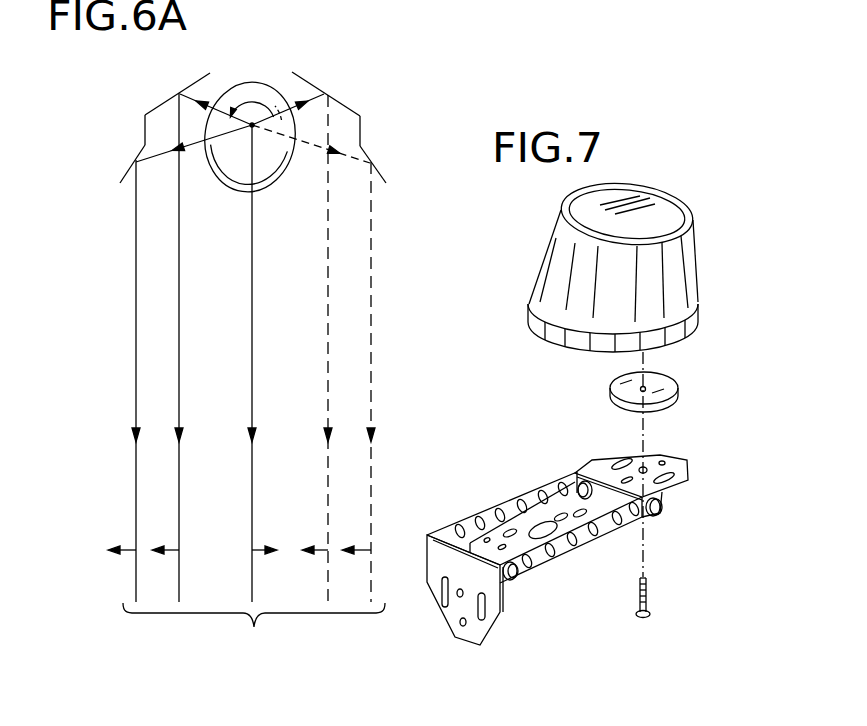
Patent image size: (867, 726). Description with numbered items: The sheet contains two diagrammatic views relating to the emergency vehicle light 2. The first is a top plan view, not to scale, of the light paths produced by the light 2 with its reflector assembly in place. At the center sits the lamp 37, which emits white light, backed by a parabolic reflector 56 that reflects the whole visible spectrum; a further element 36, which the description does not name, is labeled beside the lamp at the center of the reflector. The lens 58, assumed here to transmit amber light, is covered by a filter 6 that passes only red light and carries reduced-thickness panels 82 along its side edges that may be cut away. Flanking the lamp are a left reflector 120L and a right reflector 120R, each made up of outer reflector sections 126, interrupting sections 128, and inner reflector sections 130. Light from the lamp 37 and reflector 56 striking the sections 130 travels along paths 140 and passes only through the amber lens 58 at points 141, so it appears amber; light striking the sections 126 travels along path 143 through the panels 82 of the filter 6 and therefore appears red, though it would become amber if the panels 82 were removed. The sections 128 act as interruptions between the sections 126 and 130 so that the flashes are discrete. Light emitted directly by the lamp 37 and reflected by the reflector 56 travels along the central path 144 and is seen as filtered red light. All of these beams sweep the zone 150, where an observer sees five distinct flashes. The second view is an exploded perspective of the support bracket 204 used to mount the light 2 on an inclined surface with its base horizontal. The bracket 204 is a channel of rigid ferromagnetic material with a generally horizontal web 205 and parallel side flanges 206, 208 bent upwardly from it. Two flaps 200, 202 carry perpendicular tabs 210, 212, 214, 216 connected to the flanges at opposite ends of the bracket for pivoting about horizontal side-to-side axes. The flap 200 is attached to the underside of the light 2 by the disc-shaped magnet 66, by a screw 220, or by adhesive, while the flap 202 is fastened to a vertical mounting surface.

In FIG. 7, the emergency vehicle light 2 is at (528, 241).
In FIG. 6A, the filter 6 is at (292, 158).
In FIG. 6A, the light source 36 is at (257, 130).
In FIG. 6A, the lamp 37 is at (292, 113).
In FIG. 6A, the parabolic reflector 56 is at (296, 95).
In FIG. 6A, the lens 58 is at (263, 118).
In FIG. 7, the disc-shaped magnet 66 is at (660, 387).
In FIG. 6A, the panels 82 is at (205, 140).
In FIG. 6A, the left reflector 120L is at (136, 103).
In FIG. 6A, the right reflector 120R is at (362, 100).
In FIG. 6A, the reflector sections 126 is at (134, 168).
In FIG. 6A, the sections 128 is at (146, 133).
In FIG. 6A, the reflector sections 130 is at (195, 83).
In FIG. 6A, the paths 140 is at (179, 343).
In FIG. 6A, the points 141 is at (215, 100).
In FIG. 6A, the path 143 is at (135, 409).
In FIG. 6A, the path 144 is at (251, 323).
In FIG. 6A, the zone 150 is at (254, 633).
In FIG. 7, the flap 200 is at (689, 477).
In FIG. 7, the flap 202 is at (502, 622).
In FIG. 7, the support bracket 204 is at (657, 555).
In FIG. 7, the web 205 is at (548, 513).
In FIG. 7, the side flange 206 is at (482, 513).
In FIG. 7, the side flange 208 is at (583, 540).
In FIG. 7, the tab 210 is at (662, 512).
In FIG. 7, the tab 212 is at (580, 480).
In FIG. 7, the tab 214 is at (455, 533).
In FIG. 7, the tab 216 is at (514, 575).
In FIG. 7, the screw 220 is at (647, 595).